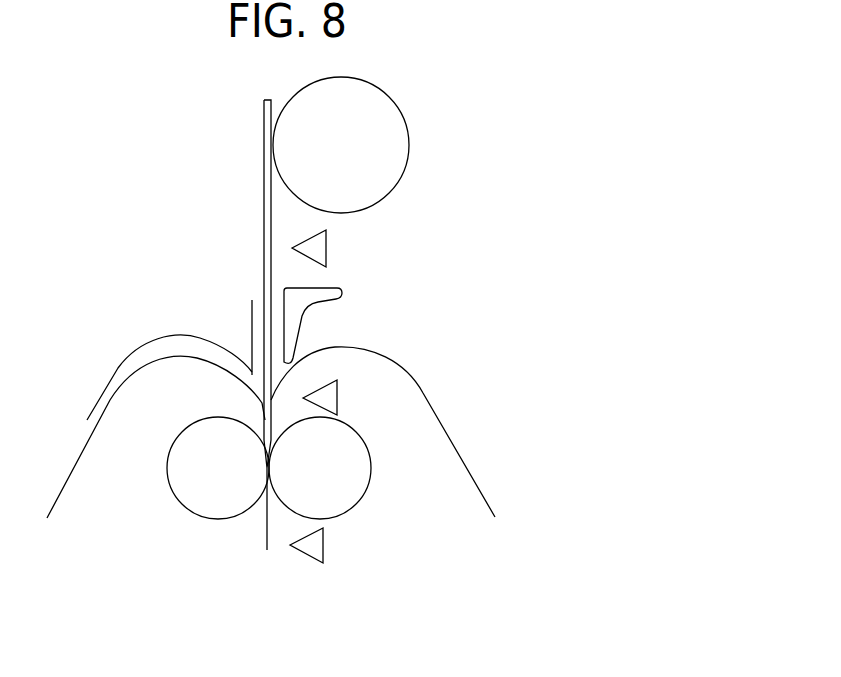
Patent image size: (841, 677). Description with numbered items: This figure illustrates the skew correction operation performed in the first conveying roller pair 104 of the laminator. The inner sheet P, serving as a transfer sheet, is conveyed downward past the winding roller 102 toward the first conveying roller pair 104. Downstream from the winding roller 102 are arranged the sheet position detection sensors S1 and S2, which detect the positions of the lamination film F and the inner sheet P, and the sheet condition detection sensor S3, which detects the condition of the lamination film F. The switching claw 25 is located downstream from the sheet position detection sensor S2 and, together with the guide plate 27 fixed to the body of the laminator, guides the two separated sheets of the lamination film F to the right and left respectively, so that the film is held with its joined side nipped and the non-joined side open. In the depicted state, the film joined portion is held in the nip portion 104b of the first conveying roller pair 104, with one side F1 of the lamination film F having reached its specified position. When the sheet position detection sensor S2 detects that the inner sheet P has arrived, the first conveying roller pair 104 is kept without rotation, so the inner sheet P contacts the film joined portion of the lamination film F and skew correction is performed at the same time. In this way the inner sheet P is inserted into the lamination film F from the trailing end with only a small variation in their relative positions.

The inner sheet P is at (263, 128).
The winding roller 102 is at (409, 145).
The sheet position detection sensor S2 is at (326, 248).
The guide plate 27 is at (190, 335).
The switching claw 25 is at (302, 325).
The lamination film F is at (253, 391).
The sheet condition detection sensor S3 is at (337, 398).
The first conveying roller pair 104 is at (370, 478).
The nip portion 104b is at (259, 513).
The one side of the lamination film F1 is at (268, 543).
The sheet position detection sensor S1 is at (323, 545).